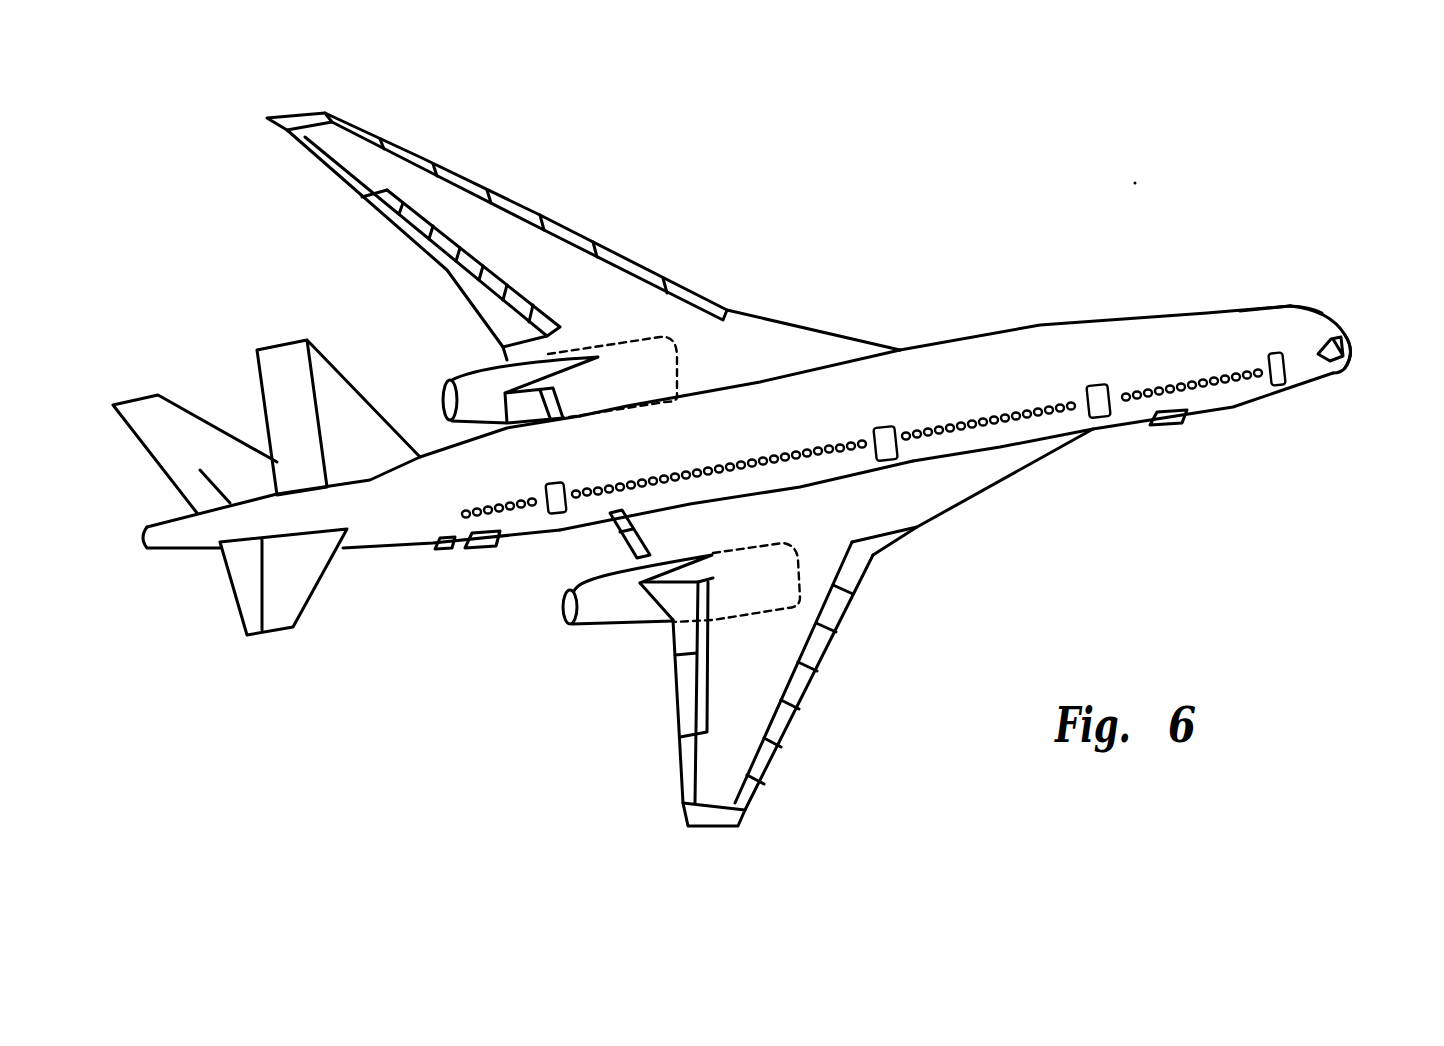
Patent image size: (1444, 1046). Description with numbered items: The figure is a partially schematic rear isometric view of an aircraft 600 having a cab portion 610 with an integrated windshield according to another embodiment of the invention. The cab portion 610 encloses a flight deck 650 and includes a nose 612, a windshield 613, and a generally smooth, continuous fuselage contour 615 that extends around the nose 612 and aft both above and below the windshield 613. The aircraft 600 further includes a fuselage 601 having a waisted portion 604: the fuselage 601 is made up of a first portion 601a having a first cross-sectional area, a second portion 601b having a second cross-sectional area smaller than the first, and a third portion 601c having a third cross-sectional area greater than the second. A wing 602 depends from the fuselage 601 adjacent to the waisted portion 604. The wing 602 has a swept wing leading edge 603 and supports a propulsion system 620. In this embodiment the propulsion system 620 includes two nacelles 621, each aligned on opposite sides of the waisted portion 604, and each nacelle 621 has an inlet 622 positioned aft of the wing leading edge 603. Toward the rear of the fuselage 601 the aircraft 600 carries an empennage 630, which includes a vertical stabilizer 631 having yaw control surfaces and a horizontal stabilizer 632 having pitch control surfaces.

The aircraft 600 is at (833, 276).
The fuselage 601 is at (1067, 322).
The first portion 601a is at (967, 353).
The second portion 601b is at (670, 423).
The third portion 601c is at (433, 510).
The wing 602 is at (652, 270).
The wing leading edge 603 is at (527, 210).
The waisted portion 604 is at (707, 503).
The cab portion 610 is at (1282, 293).
The nose 612 is at (1352, 357).
The windshield 613 is at (1343, 368).
The fuselage contour 615 is at (1307, 318).
The propulsion system 620 is at (517, 580).
The nacelles 621 is at (448, 378).
The inlet 622 is at (686, 340).
The empennage 630 is at (232, 392).
The vertical stabilizer 631 is at (318, 350).
The horizontal stabilizer 632 is at (180, 398).
The flight deck 650 is at (1272, 327).